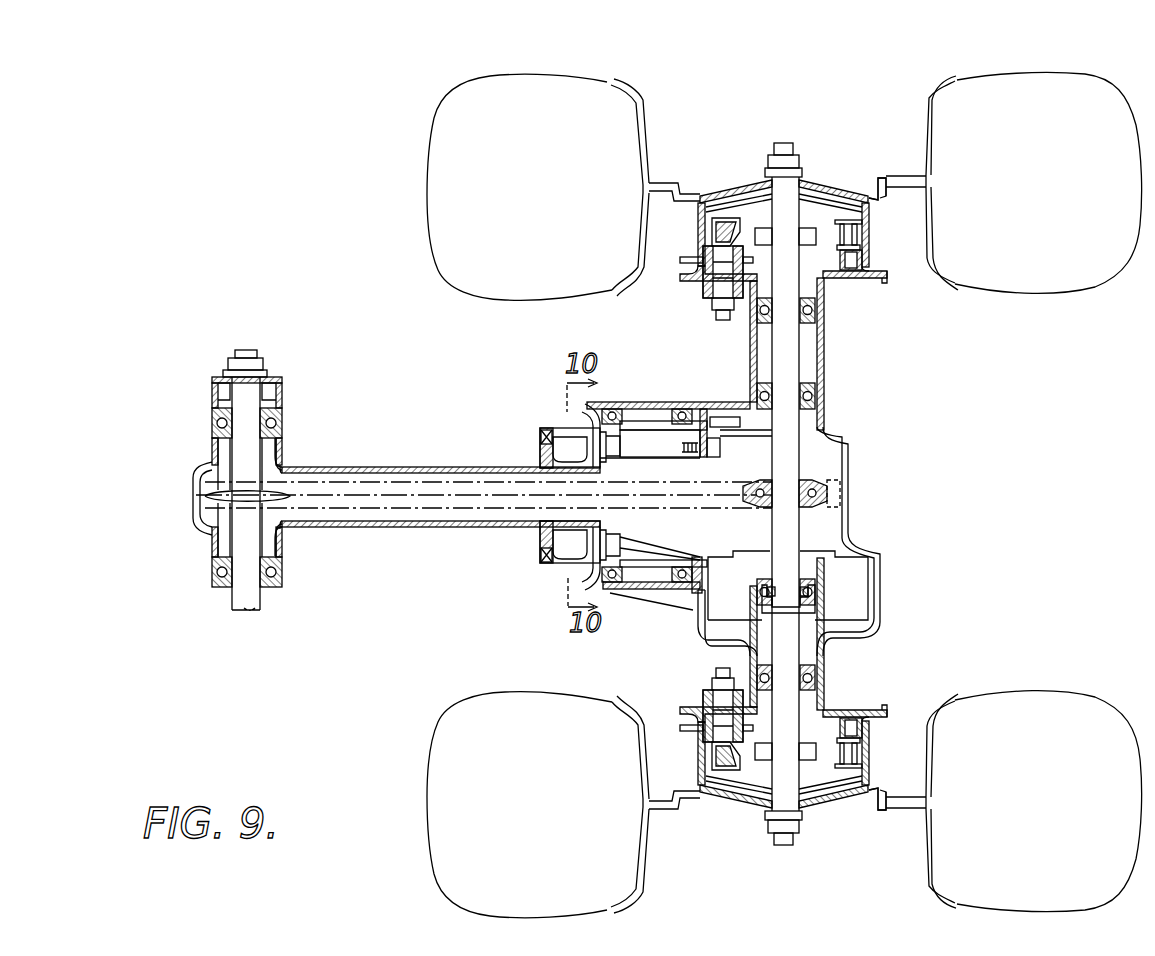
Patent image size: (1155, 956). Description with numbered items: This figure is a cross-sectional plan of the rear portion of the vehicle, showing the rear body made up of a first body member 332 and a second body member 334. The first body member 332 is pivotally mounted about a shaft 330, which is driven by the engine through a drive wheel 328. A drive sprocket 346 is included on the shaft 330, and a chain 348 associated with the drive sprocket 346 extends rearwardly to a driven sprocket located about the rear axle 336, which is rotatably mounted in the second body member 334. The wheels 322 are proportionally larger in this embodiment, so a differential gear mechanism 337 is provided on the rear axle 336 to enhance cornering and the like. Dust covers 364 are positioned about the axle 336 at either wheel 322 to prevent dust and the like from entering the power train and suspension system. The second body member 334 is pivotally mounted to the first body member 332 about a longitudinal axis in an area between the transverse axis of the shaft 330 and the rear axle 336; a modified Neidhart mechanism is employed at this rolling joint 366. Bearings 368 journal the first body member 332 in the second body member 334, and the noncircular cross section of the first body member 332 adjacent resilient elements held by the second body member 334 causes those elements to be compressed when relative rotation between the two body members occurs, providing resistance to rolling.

The wheels 322 is at (1018, 92).
The drive wheel 328 is at (280, 395).
The shaft 330 is at (233, 600).
The first body member 332 is at (366, 467).
The second body member 334 is at (657, 402).
The rear axle 336 is at (787, 357).
The differential gear mechanism 337 is at (853, 592).
The drive sprocket 346 is at (200, 528).
The chain 348 is at (323, 512).
The dust covers 364 is at (880, 200).
The rolling joint (modified Neidhart mechanism) 366 is at (568, 442).
The bearings 368 is at (680, 590).